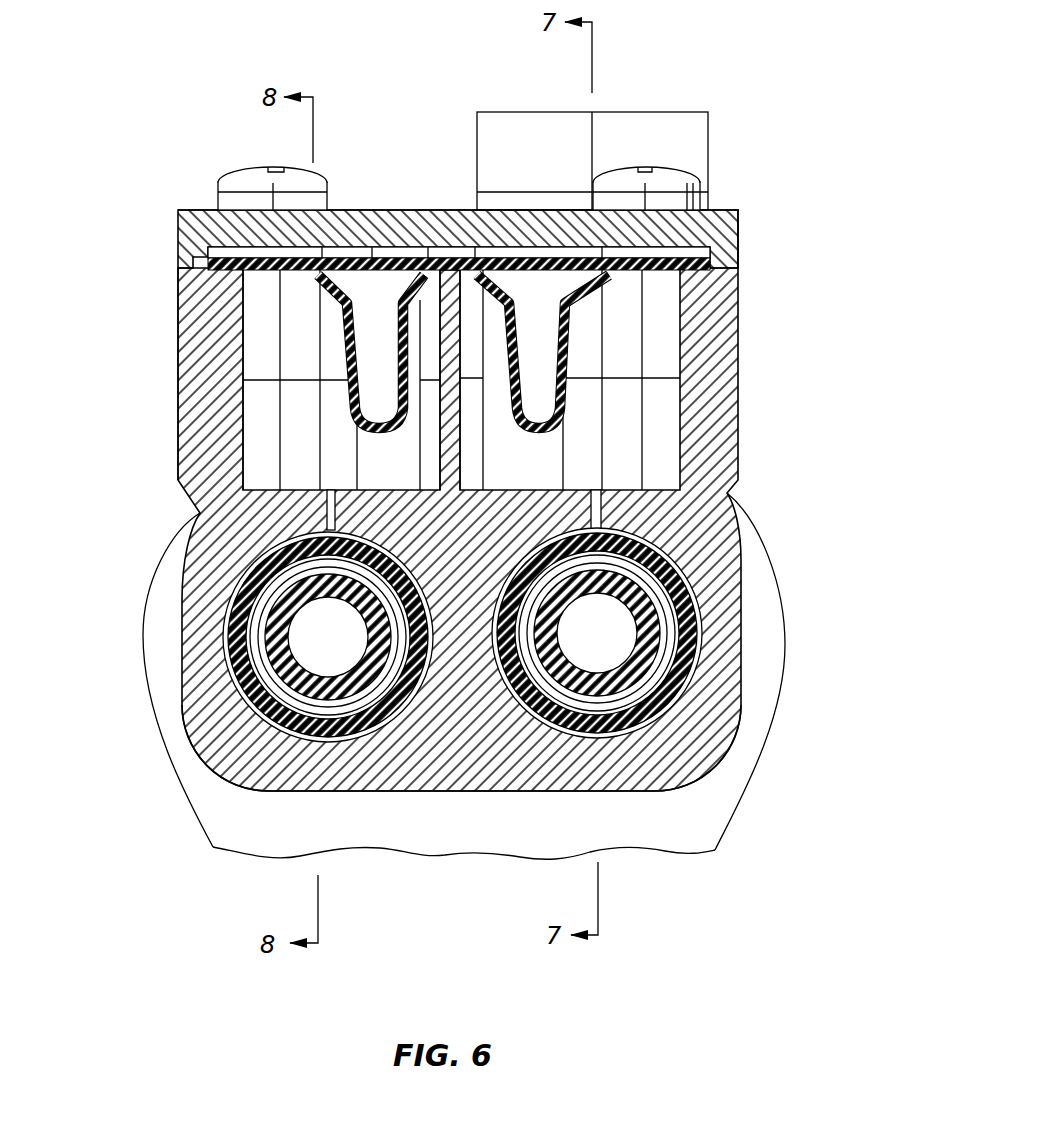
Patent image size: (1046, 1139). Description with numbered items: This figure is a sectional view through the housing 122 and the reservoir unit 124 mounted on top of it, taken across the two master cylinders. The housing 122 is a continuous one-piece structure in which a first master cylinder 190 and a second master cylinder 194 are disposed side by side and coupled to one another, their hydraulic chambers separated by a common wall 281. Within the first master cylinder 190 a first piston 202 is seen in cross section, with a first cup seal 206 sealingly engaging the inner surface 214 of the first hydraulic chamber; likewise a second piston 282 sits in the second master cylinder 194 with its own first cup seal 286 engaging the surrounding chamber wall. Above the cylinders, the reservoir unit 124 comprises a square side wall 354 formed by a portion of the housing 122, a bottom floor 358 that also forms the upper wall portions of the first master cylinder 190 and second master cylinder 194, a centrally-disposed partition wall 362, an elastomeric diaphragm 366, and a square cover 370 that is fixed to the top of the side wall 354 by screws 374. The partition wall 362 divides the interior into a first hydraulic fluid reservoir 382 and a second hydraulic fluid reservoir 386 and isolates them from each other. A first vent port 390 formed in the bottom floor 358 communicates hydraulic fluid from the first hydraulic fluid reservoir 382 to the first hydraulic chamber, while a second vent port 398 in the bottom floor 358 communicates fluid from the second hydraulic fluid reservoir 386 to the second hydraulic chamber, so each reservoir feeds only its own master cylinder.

The housing 122 is at (115, 578).
The reservoir unit 124 is at (130, 266).
The first master cylinder 190 is at (676, 724).
The second master cylinder 194 is at (236, 725).
The first piston 202 is at (700, 598).
The first cup seal 206 is at (645, 652).
The inner surface 214 is at (602, 728).
The common wall 281 is at (462, 742).
The second piston 282 is at (318, 635).
The first cup seal 286 is at (285, 674).
The side wall 354 is at (205, 365).
The bottom floor 358 is at (447, 512).
The partition wall 362 is at (448, 262).
The elastomeric diaphragm 366 is at (372, 256).
The cover 370 is at (722, 230).
The screws 374 is at (236, 178).
The first hydraulic fluid reservoir 382 is at (540, 477).
The second hydraulic fluid reservoir 386 is at (410, 477).
The first vent port 390 is at (600, 508).
The second vent port 398 is at (323, 502).